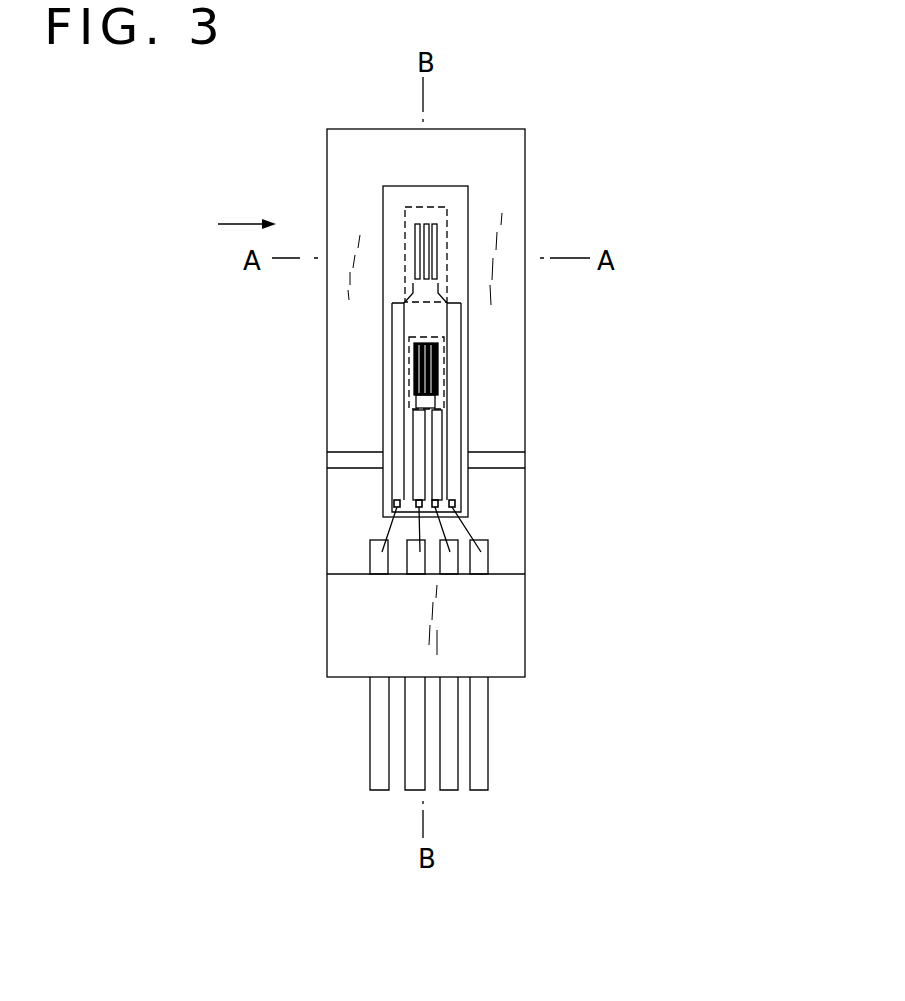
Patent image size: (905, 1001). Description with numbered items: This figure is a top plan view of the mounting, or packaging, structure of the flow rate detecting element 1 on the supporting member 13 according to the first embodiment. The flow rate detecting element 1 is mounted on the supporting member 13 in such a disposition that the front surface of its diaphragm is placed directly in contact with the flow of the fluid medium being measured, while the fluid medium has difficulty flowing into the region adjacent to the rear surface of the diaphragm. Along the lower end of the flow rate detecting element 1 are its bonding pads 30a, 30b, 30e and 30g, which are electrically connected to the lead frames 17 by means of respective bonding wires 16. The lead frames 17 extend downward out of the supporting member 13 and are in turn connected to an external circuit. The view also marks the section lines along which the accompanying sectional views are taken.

The flow rate detecting element 1 is at (396, 205).
The supporting member 13 is at (510, 388).
The bonding wires 16 is at (387, 527).
The lead frames 17 is at (483, 558).
The bonding pad 30a is at (419, 500).
The bonding pad 30b is at (393, 503).
The bonding pad 30e is at (456, 503).
The bonding pad 30g is at (436, 501).